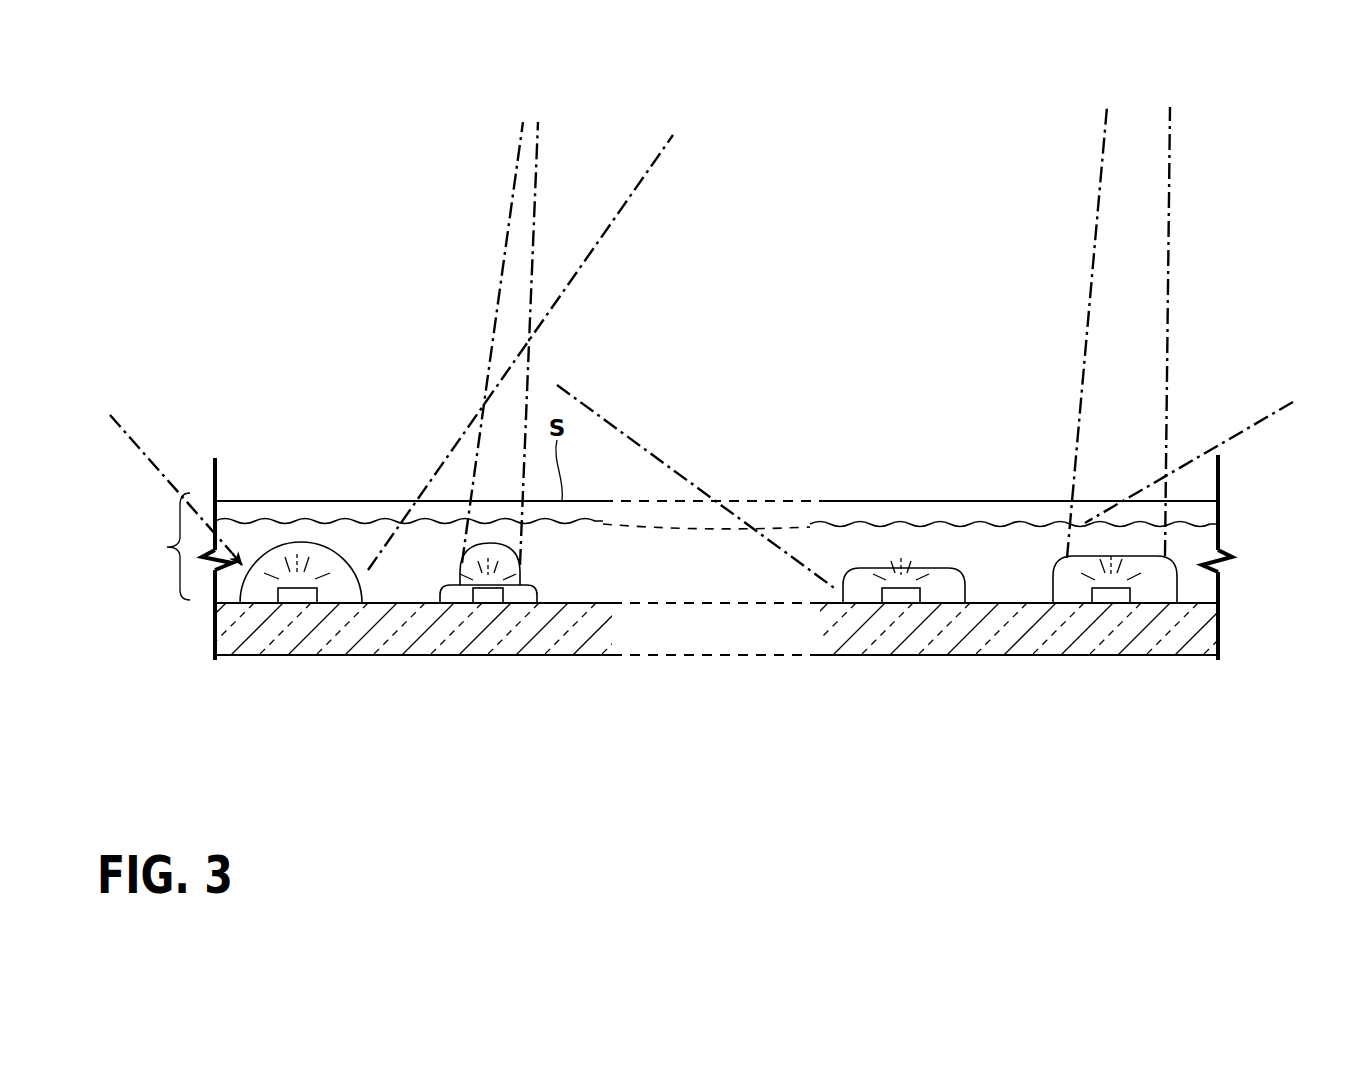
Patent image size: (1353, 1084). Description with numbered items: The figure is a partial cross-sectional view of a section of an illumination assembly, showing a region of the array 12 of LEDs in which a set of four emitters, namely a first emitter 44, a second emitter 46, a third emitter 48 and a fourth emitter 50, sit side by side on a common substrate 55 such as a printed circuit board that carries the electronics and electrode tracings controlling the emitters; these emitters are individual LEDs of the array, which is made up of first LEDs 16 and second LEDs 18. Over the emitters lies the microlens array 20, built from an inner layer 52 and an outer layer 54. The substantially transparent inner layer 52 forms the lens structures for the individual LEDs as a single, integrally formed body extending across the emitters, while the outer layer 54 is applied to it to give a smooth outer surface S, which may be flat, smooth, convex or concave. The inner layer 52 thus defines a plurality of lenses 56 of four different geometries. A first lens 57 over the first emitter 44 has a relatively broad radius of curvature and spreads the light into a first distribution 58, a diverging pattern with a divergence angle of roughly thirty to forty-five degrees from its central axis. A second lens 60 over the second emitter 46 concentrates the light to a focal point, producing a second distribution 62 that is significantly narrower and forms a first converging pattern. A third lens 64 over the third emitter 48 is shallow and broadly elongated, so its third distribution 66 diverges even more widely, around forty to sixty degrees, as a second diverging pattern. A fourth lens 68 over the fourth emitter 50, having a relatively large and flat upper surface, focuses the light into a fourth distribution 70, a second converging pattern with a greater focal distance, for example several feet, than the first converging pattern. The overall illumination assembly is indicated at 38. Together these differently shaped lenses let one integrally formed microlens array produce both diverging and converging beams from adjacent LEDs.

The array of light-emitting diodes 12 is at (1242, 571).
The first LEDs 16 is at (388, 632).
The second LEDs 18 is at (1042, 577).
The microlens array 20 is at (158, 546).
The light assembly 38 is at (703, 250).
The first emitter 44 is at (299, 603).
The second emitter 46 is at (487, 603).
The third emitter 48 is at (900, 603).
The fourth emitter 50 is at (1112, 603).
The inner layer 52 is at (633, 579).
The outer layer 54 is at (597, 513).
The common substrate 55 is at (558, 632).
The plurality of lenses 56 is at (840, 572).
The first lens 57 is at (273, 545).
The first distribution 58 is at (423, 477).
The second lens 60 is at (472, 545).
The second distribution 62 is at (525, 440).
The third lens 64 is at (875, 565).
The third distribution 66 is at (1133, 495).
The fourth lens 68 is at (1143, 556).
The fourth distribution 70 is at (1163, 325).